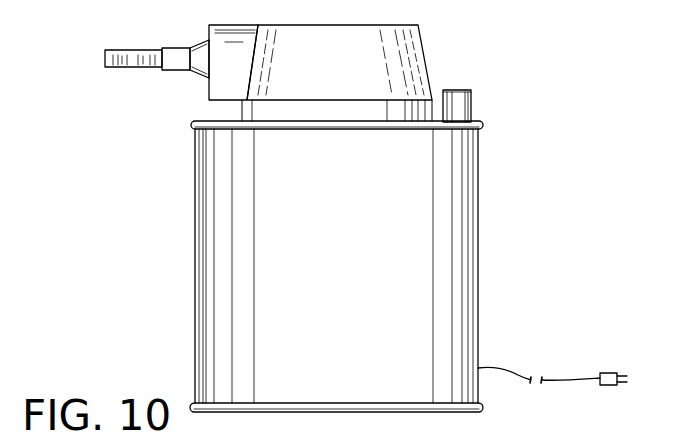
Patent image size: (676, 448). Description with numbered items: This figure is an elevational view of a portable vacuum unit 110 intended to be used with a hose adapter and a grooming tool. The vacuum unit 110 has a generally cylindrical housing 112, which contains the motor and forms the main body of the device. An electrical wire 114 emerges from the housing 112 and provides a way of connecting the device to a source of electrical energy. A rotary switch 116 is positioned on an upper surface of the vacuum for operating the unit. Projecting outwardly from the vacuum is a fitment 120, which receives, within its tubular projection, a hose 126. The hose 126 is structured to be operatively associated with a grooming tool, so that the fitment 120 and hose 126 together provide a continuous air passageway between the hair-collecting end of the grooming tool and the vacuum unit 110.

The portable vacuum unit 110 is at (327, 218).
The generally cylindrical housing 112 is at (212, 352).
The electrical wire 114 is at (600, 372).
The rotary switch 116 is at (471, 110).
The fitment 120 is at (190, 63).
The hose 126 is at (130, 58).